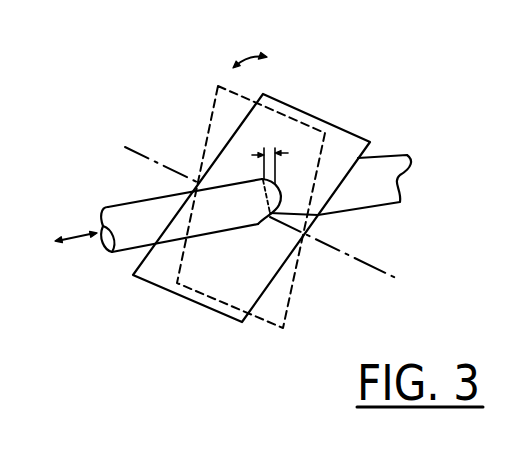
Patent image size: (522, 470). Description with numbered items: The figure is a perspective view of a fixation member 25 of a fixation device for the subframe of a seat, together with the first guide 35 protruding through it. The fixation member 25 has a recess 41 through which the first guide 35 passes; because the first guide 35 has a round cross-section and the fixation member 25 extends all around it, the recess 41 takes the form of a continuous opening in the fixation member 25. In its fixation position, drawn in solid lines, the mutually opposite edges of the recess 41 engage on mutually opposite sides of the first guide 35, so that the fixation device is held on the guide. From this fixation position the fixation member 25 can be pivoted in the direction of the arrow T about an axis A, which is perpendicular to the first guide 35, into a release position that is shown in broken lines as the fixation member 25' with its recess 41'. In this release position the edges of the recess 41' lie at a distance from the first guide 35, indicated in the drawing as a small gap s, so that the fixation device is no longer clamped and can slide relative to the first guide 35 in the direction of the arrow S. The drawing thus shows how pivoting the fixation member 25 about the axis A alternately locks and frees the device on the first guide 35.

The fixation member 25 is at (218, 238).
The fixation member in release position 25' is at (251, 264).
The first guide 35 is at (152, 218).
The recess 41 is at (361, 155).
The recess in release position 41' is at (352, 233).
The axis A is at (274, 225).
The arrow S is at (65, 228).
The arrow T is at (250, 42).
The gap distance s is at (270, 151).